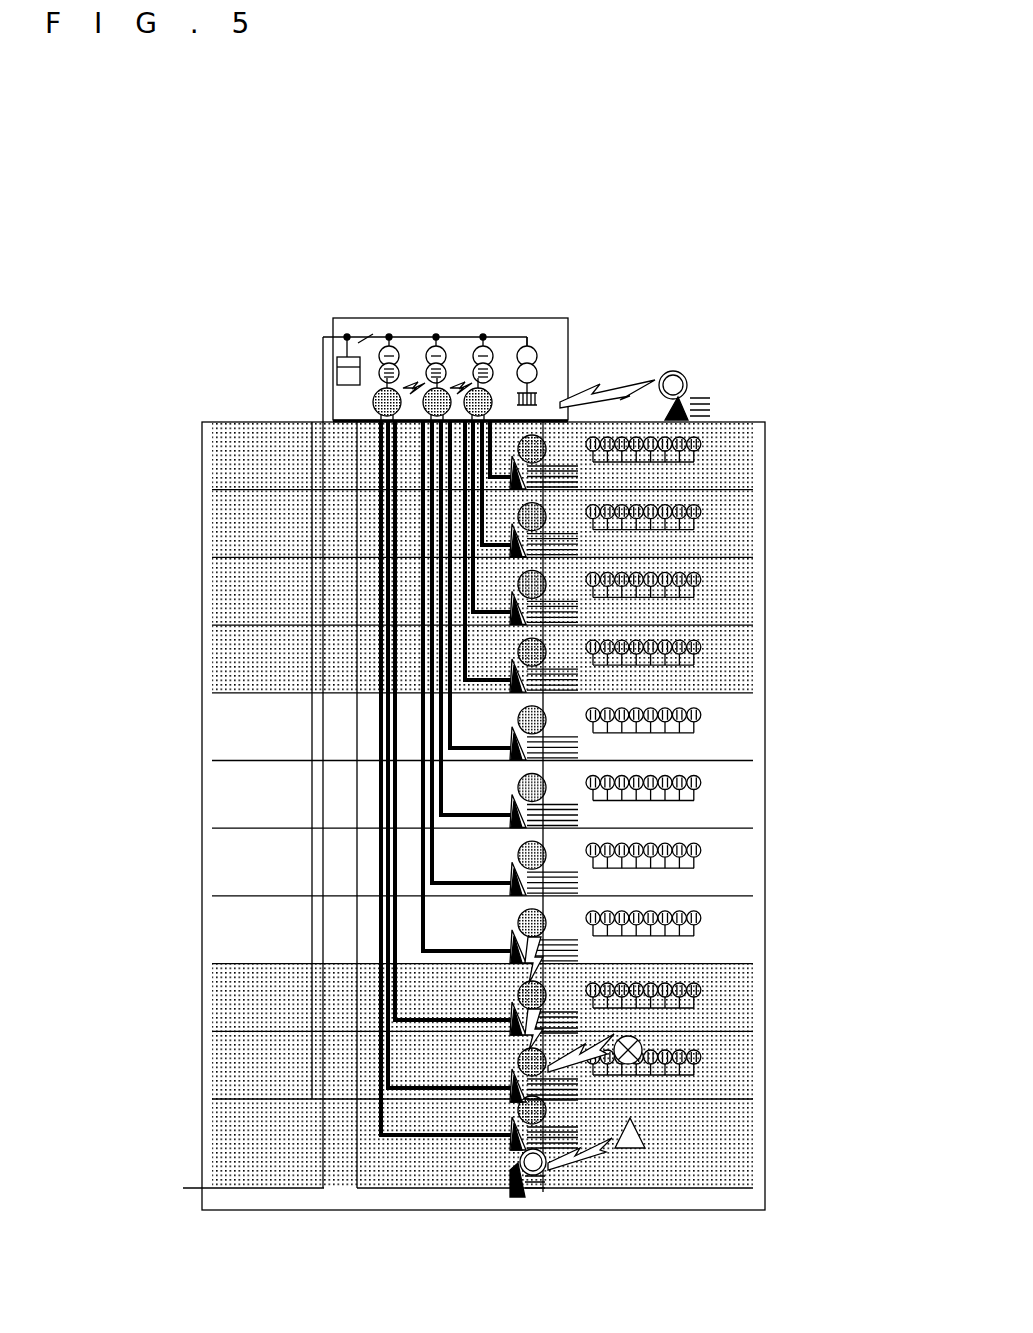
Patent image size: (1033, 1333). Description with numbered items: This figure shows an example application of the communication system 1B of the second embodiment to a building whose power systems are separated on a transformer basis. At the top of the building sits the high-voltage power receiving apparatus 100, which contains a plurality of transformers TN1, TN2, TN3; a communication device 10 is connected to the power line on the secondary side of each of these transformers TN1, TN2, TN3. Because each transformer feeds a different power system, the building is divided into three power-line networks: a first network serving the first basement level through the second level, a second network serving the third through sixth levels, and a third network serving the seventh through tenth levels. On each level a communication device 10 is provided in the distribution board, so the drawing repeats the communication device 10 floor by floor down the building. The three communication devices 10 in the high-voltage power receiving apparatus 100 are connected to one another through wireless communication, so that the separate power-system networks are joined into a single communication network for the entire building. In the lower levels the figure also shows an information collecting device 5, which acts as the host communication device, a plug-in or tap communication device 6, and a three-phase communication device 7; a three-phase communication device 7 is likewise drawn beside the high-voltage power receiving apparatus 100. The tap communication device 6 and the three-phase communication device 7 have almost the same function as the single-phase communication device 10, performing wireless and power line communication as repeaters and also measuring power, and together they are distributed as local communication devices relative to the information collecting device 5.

The communication system 1B is at (652, 188).
The high-voltage power receiving apparatus 100 is at (476, 314).
The communication device 10 is at (373, 400).
The information collecting device 5 is at (643, 1050).
The plug-in communication device (tap communication device) 6 is at (630, 1150).
The three-phase communication device 7 is at (675, 371).
The transformer TN1 is at (372, 346).
The transformer TN2 is at (445, 383).
The transformer TN3 is at (492, 390).